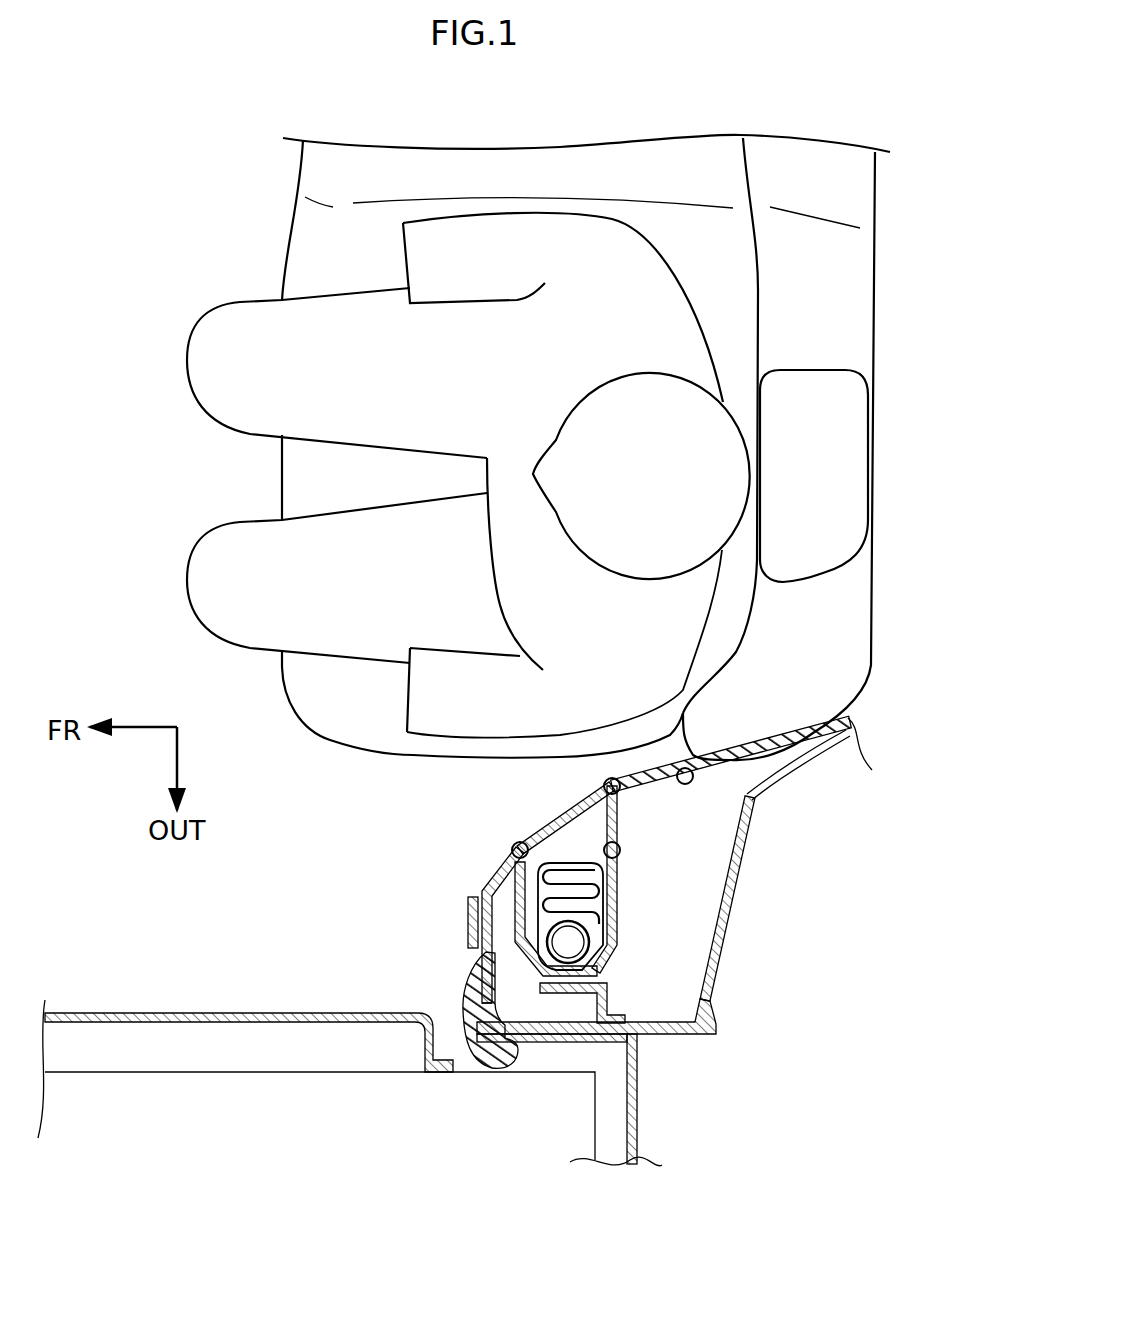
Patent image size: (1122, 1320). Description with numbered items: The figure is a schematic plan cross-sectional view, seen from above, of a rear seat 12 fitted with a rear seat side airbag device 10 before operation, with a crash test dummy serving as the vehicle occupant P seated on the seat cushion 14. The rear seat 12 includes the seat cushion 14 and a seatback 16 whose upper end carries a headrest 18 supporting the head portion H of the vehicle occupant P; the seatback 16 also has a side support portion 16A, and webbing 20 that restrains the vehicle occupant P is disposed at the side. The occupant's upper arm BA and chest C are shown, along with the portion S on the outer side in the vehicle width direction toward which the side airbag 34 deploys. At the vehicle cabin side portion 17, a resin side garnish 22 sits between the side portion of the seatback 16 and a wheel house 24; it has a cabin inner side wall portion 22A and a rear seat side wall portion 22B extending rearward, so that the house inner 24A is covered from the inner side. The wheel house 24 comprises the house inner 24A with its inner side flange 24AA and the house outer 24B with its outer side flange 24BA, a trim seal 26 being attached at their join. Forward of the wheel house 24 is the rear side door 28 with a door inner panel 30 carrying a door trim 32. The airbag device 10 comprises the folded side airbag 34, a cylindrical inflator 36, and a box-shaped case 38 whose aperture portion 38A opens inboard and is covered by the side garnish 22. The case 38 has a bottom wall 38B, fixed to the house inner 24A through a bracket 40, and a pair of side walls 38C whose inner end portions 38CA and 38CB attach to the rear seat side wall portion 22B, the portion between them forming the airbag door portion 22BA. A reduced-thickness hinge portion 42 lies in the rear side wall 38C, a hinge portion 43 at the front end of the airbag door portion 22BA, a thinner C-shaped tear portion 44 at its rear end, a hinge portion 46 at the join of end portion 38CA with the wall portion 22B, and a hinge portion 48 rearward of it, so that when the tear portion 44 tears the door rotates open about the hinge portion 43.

The rear seat side airbag device 10 is at (537, 818).
The rear seat 12 is at (185, 160).
The seat cushion 14 is at (308, 260).
The seatback 16 is at (845, 185).
The side support portion 16A is at (747, 783).
The vehicle cabin side portion 17 is at (253, 970).
The headrest 18 is at (817, 400).
The webbing 20 is at (468, 910).
The side garnish 22 is at (470, 879).
The cabin inner side wall portion 22A is at (485, 953).
The rear seat side wall portion 22B is at (680, 757).
The airbag door portion 22BA is at (593, 760).
The wheel house 24 is at (636, 981).
The house inner 24A is at (713, 905).
The inner side flange 24AA is at (655, 1030).
The house outer 24B is at (625, 1108).
The outer side flange 24BA is at (583, 1040).
The trim seal 26 is at (467, 1072).
The rear side door 28 is at (138, 1000).
The door inner panel 30 is at (605, 1125).
The door trim 32 is at (193, 1012).
The side airbag 34 is at (573, 863).
The inflator 36 is at (580, 938).
The case 38 is at (611, 956).
The aperture portion 38A is at (540, 833).
The bottom wall 38B is at (547, 978).
The side walls 38C is at (617, 892).
The end portion 38CA is at (627, 800).
The end portion 38CB is at (515, 868).
The bracket 40 is at (607, 988).
The hinge portion 42 is at (622, 850).
The hinge portion 43 is at (512, 845).
The tear portion 44 is at (607, 760).
The hinge portion 46 is at (657, 758).
The hinge portion 48 is at (686, 732).
The vehicle occupant P is at (613, 252).
The head portion H is at (640, 383).
The upper arm BA is at (693, 358).
The chest C is at (497, 553).
The portion on the outer side in the vehicle width direction S is at (550, 742).